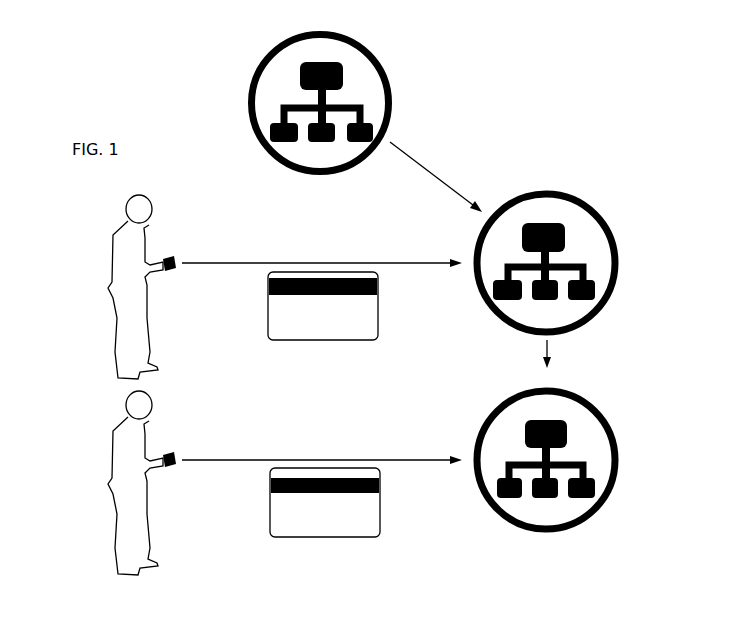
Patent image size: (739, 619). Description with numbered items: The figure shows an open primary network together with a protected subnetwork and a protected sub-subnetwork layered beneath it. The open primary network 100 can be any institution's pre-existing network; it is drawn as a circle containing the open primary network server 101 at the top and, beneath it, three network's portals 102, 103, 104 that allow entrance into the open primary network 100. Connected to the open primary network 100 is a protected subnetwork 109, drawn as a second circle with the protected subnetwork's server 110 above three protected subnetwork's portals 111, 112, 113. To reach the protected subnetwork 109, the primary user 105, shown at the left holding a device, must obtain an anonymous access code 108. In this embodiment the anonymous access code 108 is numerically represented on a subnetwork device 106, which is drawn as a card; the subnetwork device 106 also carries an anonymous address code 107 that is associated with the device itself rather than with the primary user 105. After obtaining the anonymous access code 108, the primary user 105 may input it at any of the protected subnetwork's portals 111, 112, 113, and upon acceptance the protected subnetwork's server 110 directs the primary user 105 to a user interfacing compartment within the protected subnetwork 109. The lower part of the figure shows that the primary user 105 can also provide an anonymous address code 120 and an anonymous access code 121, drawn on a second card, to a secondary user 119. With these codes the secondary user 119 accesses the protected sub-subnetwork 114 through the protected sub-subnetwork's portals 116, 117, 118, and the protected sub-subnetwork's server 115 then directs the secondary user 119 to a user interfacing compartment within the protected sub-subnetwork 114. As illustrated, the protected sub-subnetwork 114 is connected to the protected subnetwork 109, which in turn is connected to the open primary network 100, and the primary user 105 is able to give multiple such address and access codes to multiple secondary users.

The open primary network 100 is at (387, 77).
The open primary network server 101 is at (340, 85).
The network's portal 102 is at (372, 133).
The network's portal 103 is at (322, 142).
The network's portal 104 is at (270, 137).
The primary user 105 is at (115, 237).
The subnetwork device 106 is at (275, 303).
The anonymous address code 107 is at (282, 340).
The anonymous access code 108 is at (365, 338).
The protected subnetwork 109 is at (583, 202).
The protected subnetwork's server 110 is at (565, 238).
The protected subnetwork's portal 111 is at (593, 297).
The protected subnetwork's portal 112 is at (550, 298).
The protected subnetwork's portal 113 is at (503, 302).
The protected sub-subnetwork 114 is at (595, 408).
The protected sub-subnetwork's server 115 is at (565, 437).
The protected sub-subnetwork's portal 116 is at (583, 497).
The protected sub-subnetwork's portal 117 is at (547, 498).
The protected sub-subnetwork's portal 118 is at (500, 500).
The secondary user 119 is at (122, 437).
The anonymous address code 120 is at (280, 535).
The anonymous access code 121 is at (370, 535).